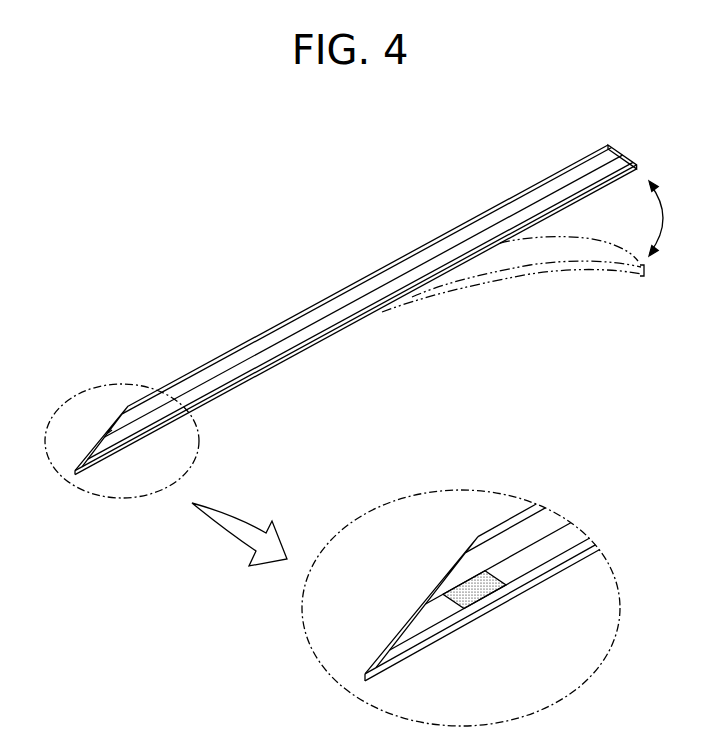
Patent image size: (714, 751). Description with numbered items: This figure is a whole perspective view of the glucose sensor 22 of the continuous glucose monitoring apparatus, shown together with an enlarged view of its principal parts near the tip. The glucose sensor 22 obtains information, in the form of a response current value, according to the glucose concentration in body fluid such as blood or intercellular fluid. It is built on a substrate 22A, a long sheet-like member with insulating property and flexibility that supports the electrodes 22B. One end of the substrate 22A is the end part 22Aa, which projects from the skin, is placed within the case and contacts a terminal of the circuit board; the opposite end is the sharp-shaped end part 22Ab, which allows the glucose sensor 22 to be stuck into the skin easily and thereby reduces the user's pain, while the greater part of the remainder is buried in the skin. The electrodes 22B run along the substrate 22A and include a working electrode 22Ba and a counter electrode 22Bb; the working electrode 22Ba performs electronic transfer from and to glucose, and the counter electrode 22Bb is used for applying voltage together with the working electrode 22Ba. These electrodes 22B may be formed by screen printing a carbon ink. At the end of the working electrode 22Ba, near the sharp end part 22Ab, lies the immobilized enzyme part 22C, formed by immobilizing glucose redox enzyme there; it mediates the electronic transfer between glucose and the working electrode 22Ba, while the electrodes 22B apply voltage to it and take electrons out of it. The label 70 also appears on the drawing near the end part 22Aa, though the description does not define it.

The glucose sensor 22 is at (351, 415).
The coating layer 70 is at (596, 161).
The substrate 22A is at (270, 376).
The end part 22Aa is at (612, 148).
The end part 22Ab is at (82, 474).
The electrodes 22B is at (356, 414).
The working electrode 22Ba is at (338, 322).
The counter electrode 22Bb is at (300, 334).
The immobilized enzyme part 22C is at (115, 446).